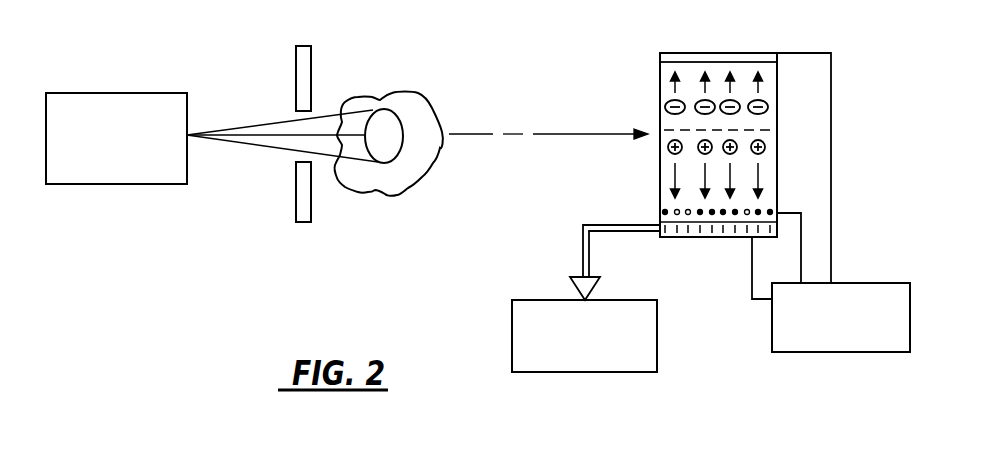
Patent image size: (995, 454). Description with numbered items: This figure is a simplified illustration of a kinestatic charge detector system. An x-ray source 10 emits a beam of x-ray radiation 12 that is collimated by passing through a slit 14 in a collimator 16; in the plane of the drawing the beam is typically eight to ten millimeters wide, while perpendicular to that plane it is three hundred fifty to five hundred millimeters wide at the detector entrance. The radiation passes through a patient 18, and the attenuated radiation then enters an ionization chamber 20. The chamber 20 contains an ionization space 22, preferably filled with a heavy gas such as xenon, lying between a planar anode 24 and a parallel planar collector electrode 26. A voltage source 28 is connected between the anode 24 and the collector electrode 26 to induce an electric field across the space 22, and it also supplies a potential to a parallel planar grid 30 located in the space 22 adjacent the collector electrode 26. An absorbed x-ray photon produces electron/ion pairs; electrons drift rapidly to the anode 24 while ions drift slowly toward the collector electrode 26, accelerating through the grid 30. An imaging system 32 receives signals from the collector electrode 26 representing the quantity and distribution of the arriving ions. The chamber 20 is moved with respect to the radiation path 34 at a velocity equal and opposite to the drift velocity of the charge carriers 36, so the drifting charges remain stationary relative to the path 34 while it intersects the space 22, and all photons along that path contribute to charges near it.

The x-ray source 10 is at (131, 93).
The beam of x-ray radiation 12 is at (241, 128).
The slit 14 is at (313, 133).
The collimator 16 is at (313, 53).
The patient 18 is at (427, 97).
The ionization chamber 20 is at (746, 45).
The ionization space 22 is at (657, 105).
The planar anode 24 is at (657, 57).
The collector electrode 26 is at (655, 238).
The voltage source 28 is at (882, 282).
The grid 30 is at (655, 213).
The imaging system 32 is at (657, 356).
The radiation path 34 is at (551, 100).
The charge carriers 36 is at (737, 142).